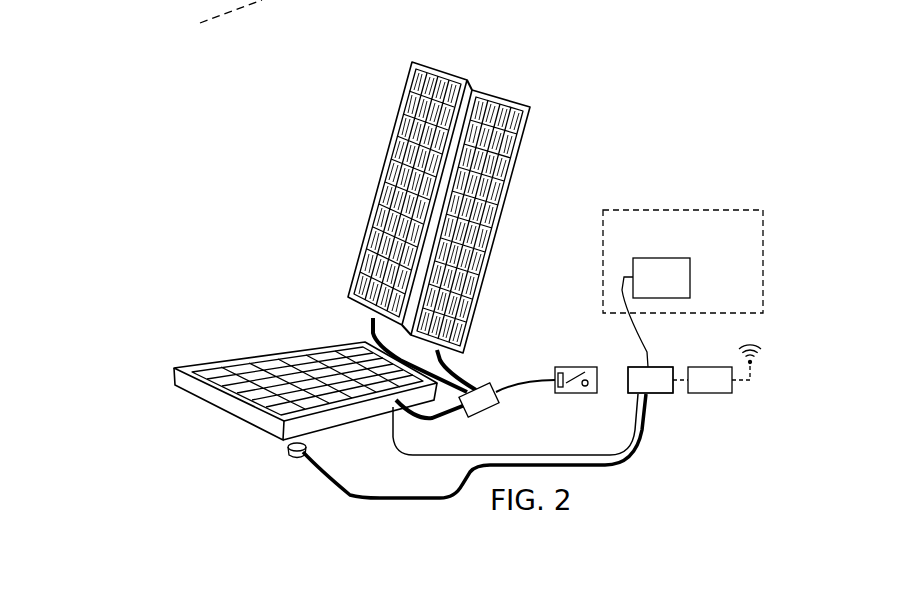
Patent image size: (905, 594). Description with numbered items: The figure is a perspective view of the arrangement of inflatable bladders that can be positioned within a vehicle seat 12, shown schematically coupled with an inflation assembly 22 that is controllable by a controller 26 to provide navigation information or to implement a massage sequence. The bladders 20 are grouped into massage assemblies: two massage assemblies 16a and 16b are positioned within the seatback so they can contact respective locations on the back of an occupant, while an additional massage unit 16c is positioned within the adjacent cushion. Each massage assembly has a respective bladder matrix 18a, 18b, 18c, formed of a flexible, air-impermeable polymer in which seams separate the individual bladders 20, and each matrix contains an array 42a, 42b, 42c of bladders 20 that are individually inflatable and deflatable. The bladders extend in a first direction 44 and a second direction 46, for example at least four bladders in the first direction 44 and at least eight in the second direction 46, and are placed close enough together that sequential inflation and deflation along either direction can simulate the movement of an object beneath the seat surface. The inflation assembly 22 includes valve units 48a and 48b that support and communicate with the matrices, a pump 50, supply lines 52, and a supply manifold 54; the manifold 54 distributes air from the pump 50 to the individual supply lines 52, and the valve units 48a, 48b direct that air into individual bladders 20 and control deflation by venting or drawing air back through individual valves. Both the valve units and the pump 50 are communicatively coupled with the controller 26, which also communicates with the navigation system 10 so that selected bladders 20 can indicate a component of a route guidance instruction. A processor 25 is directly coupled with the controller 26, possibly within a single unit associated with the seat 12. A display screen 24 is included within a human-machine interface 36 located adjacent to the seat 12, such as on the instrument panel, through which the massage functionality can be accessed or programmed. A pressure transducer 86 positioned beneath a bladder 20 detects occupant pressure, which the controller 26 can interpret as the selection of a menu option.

The navigation system 10 is at (722, 387).
The seat 12 is at (658, 93).
The massage assembly 16a is at (402, 168).
The massage assembly 16b is at (505, 215).
The massage unit 16c is at (276, 377).
The bladder matrix 18a is at (396, 111).
The bladder matrix 18b is at (512, 145).
The bladder matrix 18c is at (223, 360).
The inflatable bladders 20 is at (503, 101).
The inflation assembly 22 is at (665, 347).
The display screen 24 is at (660, 267).
The processor 25 is at (672, 400).
The controller 26 is at (653, 394).
The human-machine interface 36 is at (643, 221).
The array of bladders 42a is at (377, 258).
The array of bladders 42b is at (486, 282).
The array of bladders 42c is at (282, 418).
The first direction 44 is at (537, 163).
The second direction 46 is at (477, 65).
The valve unit 48a is at (470, 82).
The valve unit 48b is at (480, 306).
The pump 50 is at (573, 395).
The supply lines 52 is at (458, 384).
The supply manifold 54 is at (490, 403).
The pressure transducer 86 is at (297, 458).